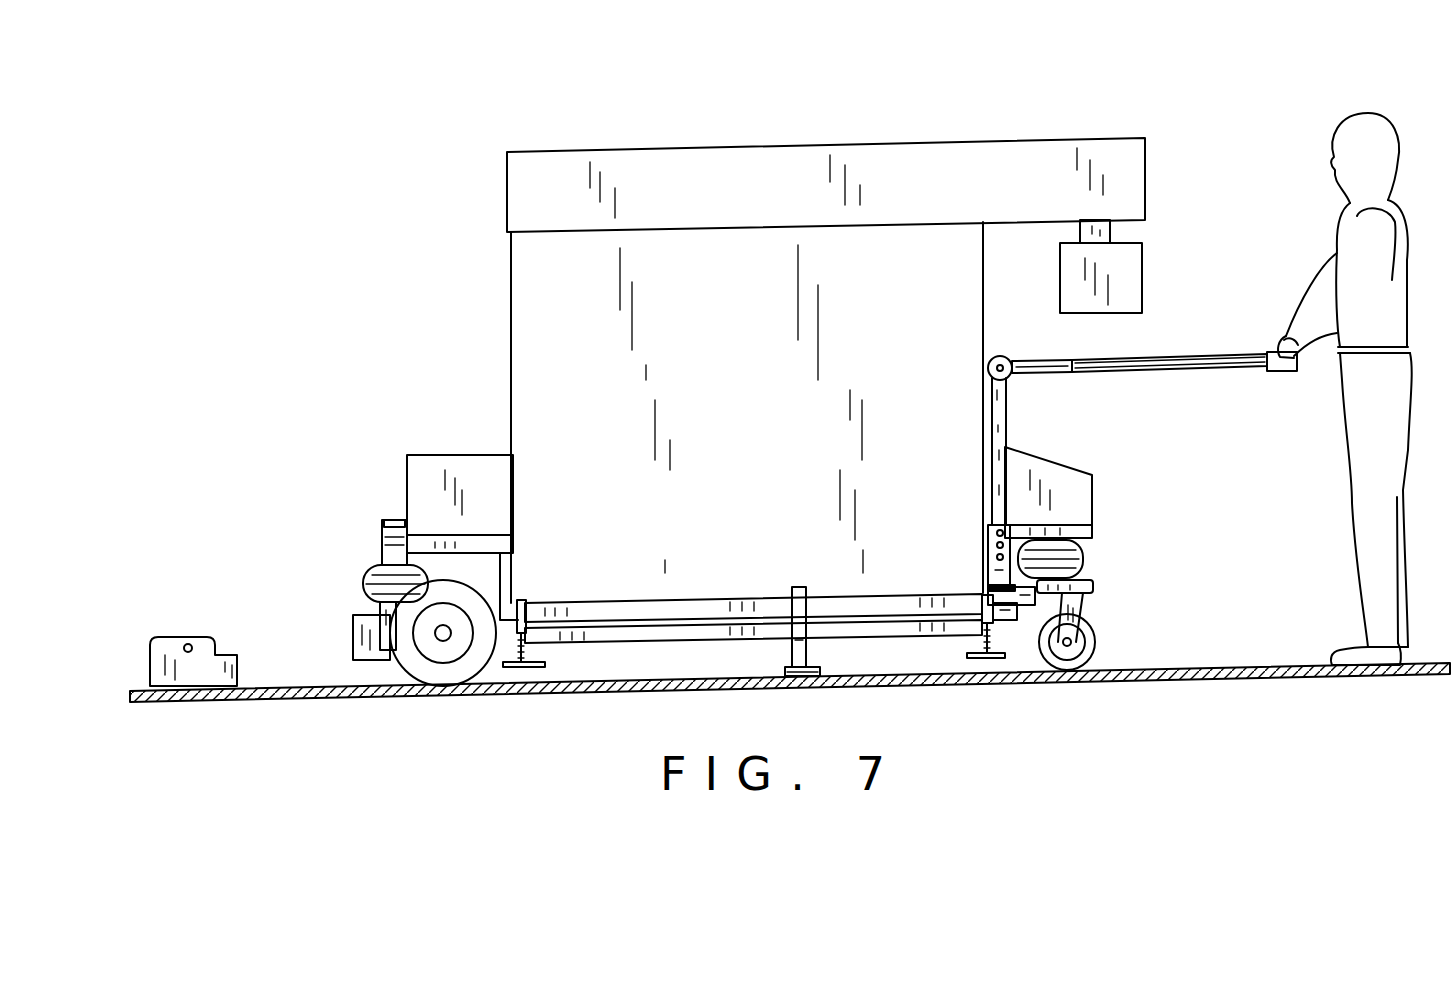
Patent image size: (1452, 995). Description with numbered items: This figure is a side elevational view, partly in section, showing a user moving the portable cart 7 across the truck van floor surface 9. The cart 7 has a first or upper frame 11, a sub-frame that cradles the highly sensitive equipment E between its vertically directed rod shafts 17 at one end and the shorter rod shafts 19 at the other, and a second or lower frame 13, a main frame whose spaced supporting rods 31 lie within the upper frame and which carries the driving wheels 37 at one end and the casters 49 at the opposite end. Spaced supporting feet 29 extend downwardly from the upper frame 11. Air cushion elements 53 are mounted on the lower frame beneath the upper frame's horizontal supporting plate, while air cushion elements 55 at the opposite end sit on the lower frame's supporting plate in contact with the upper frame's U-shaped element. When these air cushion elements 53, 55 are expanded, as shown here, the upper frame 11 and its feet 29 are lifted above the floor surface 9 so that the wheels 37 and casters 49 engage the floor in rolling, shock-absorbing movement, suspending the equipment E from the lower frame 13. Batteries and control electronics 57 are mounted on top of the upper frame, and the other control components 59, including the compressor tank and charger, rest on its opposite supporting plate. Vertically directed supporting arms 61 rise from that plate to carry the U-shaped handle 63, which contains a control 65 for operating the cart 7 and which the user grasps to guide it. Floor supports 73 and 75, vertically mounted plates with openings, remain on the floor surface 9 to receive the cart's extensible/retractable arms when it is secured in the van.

The highly sensitive equipment E is at (739, 296).
The portable cart 7 is at (1117, 456).
The truck van floor surface 9 is at (1170, 680).
The first or upper frame 11 is at (653, 608).
The second or lower frame 13 is at (675, 652).
The vertically directed rod shafts 17 is at (1000, 569).
The vertically directed rod shafts 19 is at (510, 580).
The supporting feet 29 is at (523, 668).
The spaced supporting rods 31 is at (860, 630).
The wheels 37 is at (357, 642).
The casters 49 is at (1090, 640).
The air cushion elements 53 is at (1090, 559).
The air cushion elements 55 is at (365, 566).
The batteries and control electronics 57 is at (472, 477).
The control components 59 is at (1040, 480).
The vertically directed supporting arms 61 is at (1000, 402).
The U-shaped handle 63 is at (1177, 360).
The control 65 is at (1268, 350).
The floor supports 73 is at (798, 650).
The floor support 75 is at (178, 657).